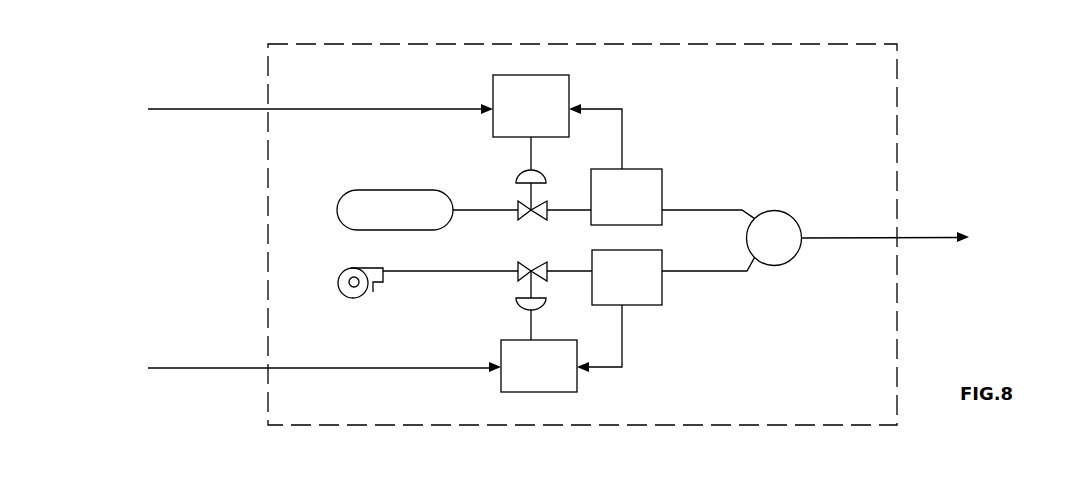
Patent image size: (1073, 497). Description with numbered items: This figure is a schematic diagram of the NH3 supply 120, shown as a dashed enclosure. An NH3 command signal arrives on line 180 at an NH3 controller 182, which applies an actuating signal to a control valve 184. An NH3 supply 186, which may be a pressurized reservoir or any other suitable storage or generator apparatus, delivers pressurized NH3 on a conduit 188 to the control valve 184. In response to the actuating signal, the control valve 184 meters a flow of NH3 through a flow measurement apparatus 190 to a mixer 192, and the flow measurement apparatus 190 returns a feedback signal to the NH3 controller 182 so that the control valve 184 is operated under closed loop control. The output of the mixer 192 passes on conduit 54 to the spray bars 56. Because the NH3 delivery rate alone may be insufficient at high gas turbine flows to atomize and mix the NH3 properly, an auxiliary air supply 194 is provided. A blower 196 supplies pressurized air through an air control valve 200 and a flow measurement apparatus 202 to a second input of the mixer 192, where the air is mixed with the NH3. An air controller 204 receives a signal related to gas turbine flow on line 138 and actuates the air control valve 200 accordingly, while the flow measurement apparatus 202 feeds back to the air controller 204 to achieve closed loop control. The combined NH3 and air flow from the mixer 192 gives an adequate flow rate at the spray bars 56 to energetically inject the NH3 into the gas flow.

The conduit 54 is at (914, 238).
The spray bars 56 is at (1023, 238).
The NH3 supply 120 is at (785, 157).
The line 138 is at (173, 369).
The line 180 is at (193, 109).
The NH3 controller 182 is at (566, 75).
The control valve 184 is at (543, 215).
The NH3 supply 186 is at (399, 195).
The conduit 188 is at (482, 210).
The flow measurement apparatus 190 is at (649, 170).
The mixer 192 is at (795, 220).
The auxiliary air supply 194 is at (714, 337).
The blower 196 is at (362, 297).
The air control valve 200 is at (532, 264).
The flow measurement apparatus 202 is at (648, 305).
The air controller 204 is at (562, 395).